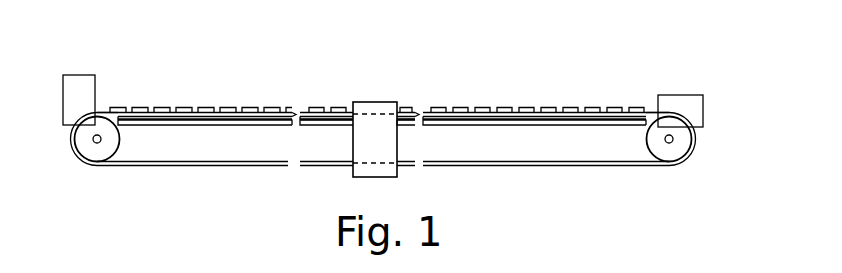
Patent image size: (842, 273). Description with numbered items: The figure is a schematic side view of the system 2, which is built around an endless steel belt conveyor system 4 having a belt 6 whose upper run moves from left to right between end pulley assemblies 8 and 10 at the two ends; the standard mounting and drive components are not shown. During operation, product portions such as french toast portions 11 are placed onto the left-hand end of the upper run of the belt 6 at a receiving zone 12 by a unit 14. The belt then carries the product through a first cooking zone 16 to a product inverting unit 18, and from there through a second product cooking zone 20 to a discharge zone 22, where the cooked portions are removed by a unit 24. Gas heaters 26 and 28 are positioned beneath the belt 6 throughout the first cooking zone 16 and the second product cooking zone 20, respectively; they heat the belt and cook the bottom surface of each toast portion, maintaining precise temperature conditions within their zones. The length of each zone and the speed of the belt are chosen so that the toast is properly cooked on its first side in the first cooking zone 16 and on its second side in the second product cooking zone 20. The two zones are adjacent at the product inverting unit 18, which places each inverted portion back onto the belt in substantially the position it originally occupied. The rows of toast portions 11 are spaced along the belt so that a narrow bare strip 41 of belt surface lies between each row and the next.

The system 2 is at (700, 36).
The endless steel belt conveyor system 4 is at (698, 148).
The belt 6 is at (199, 168).
The end pulley assembly 8 is at (120, 142).
The end pulley assembly 10 is at (646, 143).
The french toast portions 11 is at (327, 107).
The receiving zone 12 is at (101, 107).
The unit 14 is at (74, 86).
The first cooking zone 16 is at (268, 93).
The product inverting unit 18 is at (375, 100).
The second product cooking zone 20 is at (522, 106).
The discharge zone 22 is at (652, 106).
The unit 24 is at (703, 106).
The gas heater 26 is at (245, 125).
The gas heater 28 is at (445, 126).
The bare strip 41 is at (173, 106).